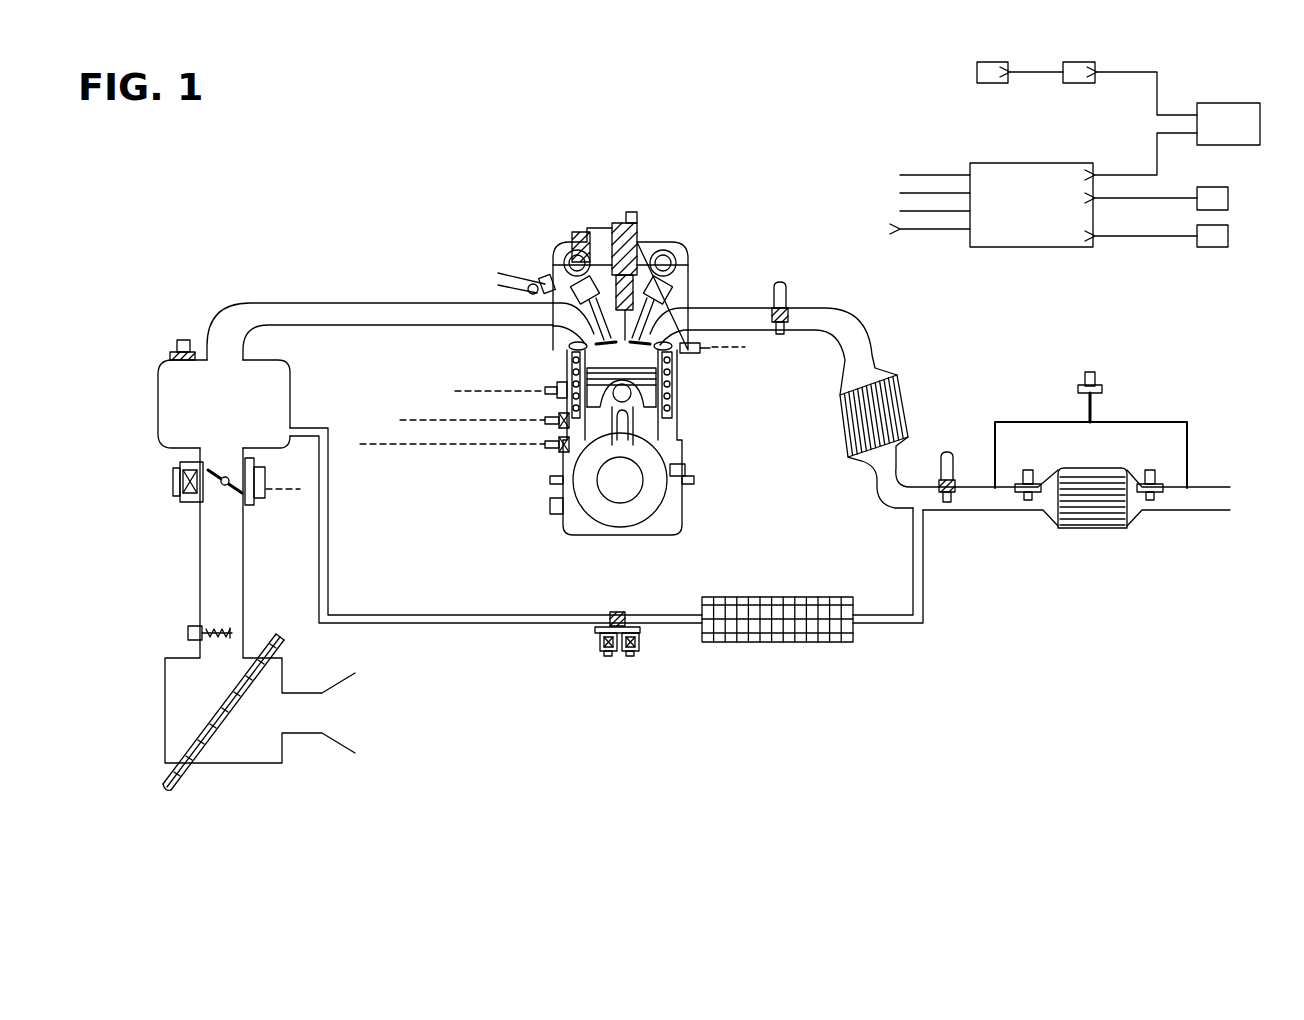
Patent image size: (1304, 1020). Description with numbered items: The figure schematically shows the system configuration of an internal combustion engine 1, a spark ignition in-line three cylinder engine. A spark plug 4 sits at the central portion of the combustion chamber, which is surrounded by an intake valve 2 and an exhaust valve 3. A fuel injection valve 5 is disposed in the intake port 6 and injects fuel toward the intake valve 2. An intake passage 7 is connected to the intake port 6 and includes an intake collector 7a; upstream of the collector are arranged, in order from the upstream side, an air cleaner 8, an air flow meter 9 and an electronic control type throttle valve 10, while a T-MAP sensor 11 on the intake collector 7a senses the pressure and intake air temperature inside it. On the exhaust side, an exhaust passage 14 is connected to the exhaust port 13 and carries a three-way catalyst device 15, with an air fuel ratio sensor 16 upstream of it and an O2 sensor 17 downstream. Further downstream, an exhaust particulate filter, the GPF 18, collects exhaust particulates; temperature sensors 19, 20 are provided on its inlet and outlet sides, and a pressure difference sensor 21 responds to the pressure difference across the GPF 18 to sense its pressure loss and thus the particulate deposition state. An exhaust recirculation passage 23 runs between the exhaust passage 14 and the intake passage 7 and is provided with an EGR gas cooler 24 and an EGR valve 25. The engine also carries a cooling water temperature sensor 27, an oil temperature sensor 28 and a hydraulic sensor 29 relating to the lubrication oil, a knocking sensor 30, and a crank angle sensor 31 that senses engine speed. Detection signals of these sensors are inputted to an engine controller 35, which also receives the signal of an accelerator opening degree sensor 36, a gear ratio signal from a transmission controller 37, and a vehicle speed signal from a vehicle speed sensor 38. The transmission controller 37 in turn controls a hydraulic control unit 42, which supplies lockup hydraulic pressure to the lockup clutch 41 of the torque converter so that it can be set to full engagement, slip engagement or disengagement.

The internal combustion engine 1 is at (686, 218).
The intake valve 2 is at (572, 353).
The exhaust valve 3 is at (665, 330).
The spark plug 4 is at (633, 262).
The fuel injection valve 5 is at (527, 290).
The intake port 6 is at (556, 329).
The intake passage 7 is at (357, 316).
The intake collector 7a is at (190, 402).
The air cleaner 8 is at (212, 737).
The air flow meter 9 is at (228, 629).
The electronic control type throttle valve 10 is at (232, 489).
The T-MAP sensor 11 is at (172, 352).
The exhaust port 13 is at (683, 330).
The exhaust passage 14 is at (860, 319).
The catalyst device 15 is at (905, 396).
The air fuel ratio sensor 16 is at (782, 279).
The O2 sensor 17 is at (947, 451).
The exhaust particulate filter (GPF) 18 is at (1110, 529).
The temperature sensor 19 is at (1033, 470).
The temperature sensor 20 is at (1147, 470).
The pressure difference sensor 21 is at (1101, 388).
The exhaust recirculation passage 23 is at (470, 624).
The EGR gas cooler 24 is at (775, 643).
The EGR valve 25 is at (622, 657).
The cooling water temperature sensor 27 is at (702, 356).
The oil temperature sensor 28 is at (549, 418).
The hydraulic sensor 29 is at (553, 449).
The knocking sensor 30 is at (549, 388).
The crank angle sensor 31 is at (689, 470).
The engine controller 35 is at (985, 163).
The accelerator opening degree sensor 36 is at (1230, 198).
The transmission controller 37 is at (1245, 103).
The vehicle speed sensor 38 is at (1230, 236).
The lockup clutch 41 is at (975, 70).
The hydraulic control unit 42 is at (1082, 84).